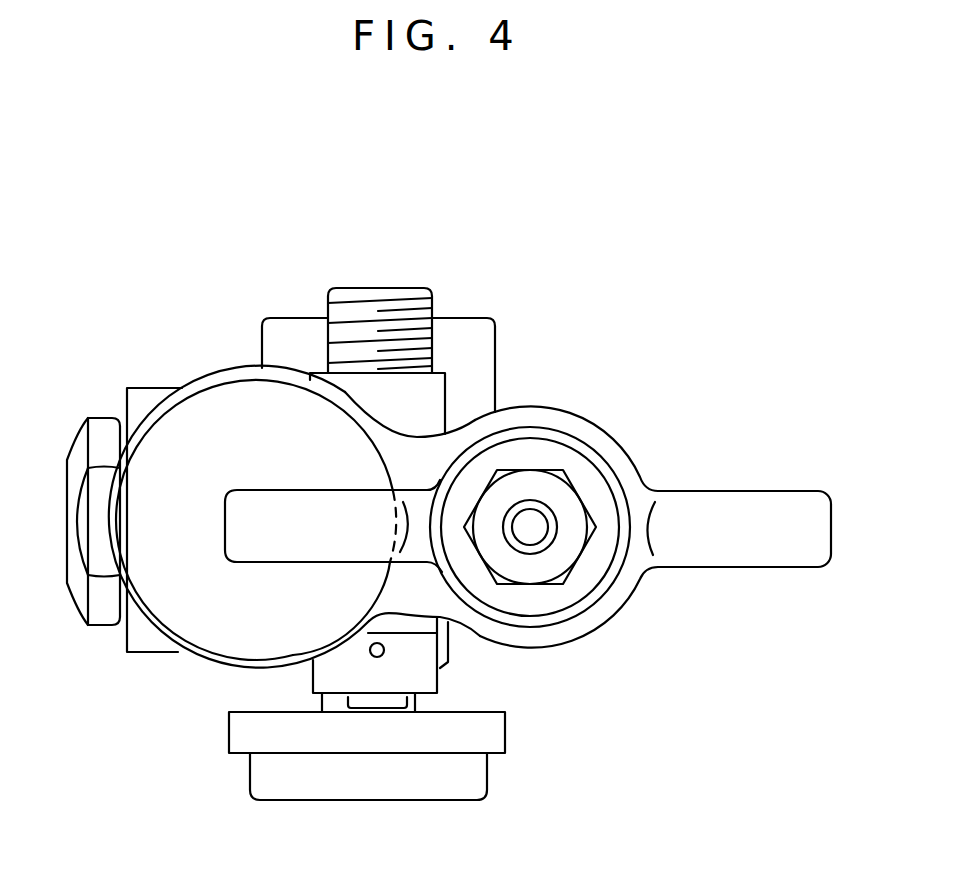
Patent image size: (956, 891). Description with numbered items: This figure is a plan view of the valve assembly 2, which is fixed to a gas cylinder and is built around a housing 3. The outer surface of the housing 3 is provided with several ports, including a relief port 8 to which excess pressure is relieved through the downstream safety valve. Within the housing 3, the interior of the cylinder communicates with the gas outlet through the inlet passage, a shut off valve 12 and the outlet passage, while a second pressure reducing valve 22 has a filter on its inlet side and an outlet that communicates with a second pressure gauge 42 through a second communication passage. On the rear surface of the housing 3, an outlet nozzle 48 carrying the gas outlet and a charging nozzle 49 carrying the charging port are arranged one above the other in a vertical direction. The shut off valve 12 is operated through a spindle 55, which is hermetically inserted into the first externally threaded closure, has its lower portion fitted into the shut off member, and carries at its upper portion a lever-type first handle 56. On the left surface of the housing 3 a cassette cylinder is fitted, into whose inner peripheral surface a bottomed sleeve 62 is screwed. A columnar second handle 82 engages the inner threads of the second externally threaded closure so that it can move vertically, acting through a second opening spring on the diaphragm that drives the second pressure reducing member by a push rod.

The valve assembly 2 is at (582, 315).
The housing 3 is at (604, 428).
The relief port 8 is at (383, 653).
The shut off valve 12 is at (569, 629).
The second pressure reducing valve 22 is at (188, 662).
The second pressure gauge 42 is at (338, 797).
The outlet nozzle 48 is at (400, 288).
The charging nozzle 49 is at (460, 318).
The spindle 55 is at (550, 537).
The first handle 56 is at (730, 557).
The bottomed sleeve 62 is at (108, 625).
The second handle 82 is at (232, 647).